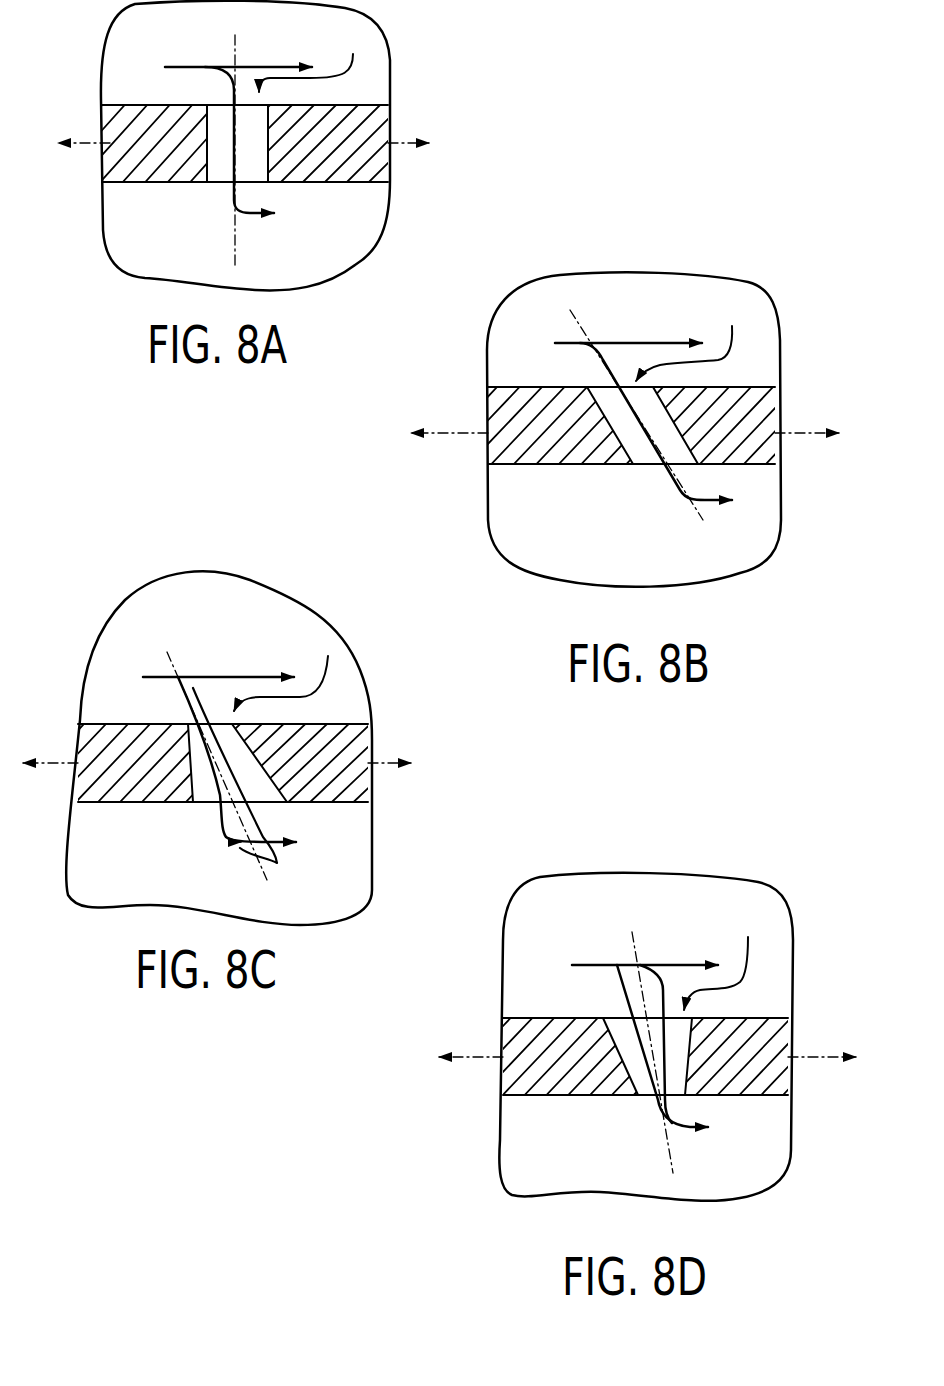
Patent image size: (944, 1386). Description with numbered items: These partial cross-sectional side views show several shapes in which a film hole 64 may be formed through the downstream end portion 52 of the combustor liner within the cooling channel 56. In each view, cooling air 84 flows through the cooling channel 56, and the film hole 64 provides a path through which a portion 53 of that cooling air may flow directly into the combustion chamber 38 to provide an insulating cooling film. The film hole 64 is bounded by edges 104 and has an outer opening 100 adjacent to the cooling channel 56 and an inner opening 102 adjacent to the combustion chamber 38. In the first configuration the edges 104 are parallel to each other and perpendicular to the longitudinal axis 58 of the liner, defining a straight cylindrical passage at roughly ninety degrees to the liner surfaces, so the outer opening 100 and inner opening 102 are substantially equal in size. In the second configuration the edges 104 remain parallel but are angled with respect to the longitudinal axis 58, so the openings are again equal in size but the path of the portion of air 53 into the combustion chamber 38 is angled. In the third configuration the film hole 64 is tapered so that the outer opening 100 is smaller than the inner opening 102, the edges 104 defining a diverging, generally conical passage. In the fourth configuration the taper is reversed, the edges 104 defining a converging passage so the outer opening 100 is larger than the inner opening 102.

In FIG. 8A, the combustion chamber 38 is at (142, 228).
In FIG. 8B, the combustion chamber 38 is at (533, 508).
In FIG. 8C, the combustion chamber 38 is at (120, 846).
In FIG. 8D, the combustion chamber 38 is at (547, 1141).
In FIG. 8A, the downstream end portion 52 is at (386, 124).
In FIG. 8B, the downstream end portion 52 is at (746, 432).
In FIG. 8C, the downstream end portion 52 is at (331, 765).
In FIG. 8D, the downstream end portion 52 is at (775, 1043).
In FIG. 8A, the portion of cooling air 53 is at (259, 214).
In FIG. 8B, the portion of cooling air 53 is at (713, 500).
In FIG. 8C, the portion of cooling air 53 is at (241, 786).
In FIG. 8D, the portion of cooling air 53 is at (688, 1126).
In FIG. 8A, the cooling channel 56 is at (207, 39).
In FIG. 8B, the cooling channel 56 is at (632, 305).
In FIG. 8C, the cooling channel 56 is at (183, 643).
In FIG. 8D, the cooling channel 56 is at (612, 935).
In FIG. 8A, the longitudinal axis 58 is at (88, 145).
In FIG. 8B, the longitudinal axis 58 is at (450, 435).
In FIG. 8C, the longitudinal axis 58 is at (52, 763).
In FIG. 8D, the longitudinal axis 58 is at (470, 1058).
In FIG. 8A, the film hole 64 is at (265, 143).
In FIG. 8B, the film hole 64 is at (603, 390).
In FIG. 8C, the film hole 64 is at (223, 767).
In FIG. 8D, the film hole 64 is at (620, 1021).
In FIG. 8A, the cooling air 84 is at (250, 63).
In FIG. 8B, the cooling air 84 is at (643, 340).
In FIG. 8C, the cooling air 84 is at (229, 672).
In FIG. 8D, the cooling air 84 is at (652, 967).
In FIG. 8A, the outer opening 100 is at (315, 60).
In FIG. 8B, the outer opening 100 is at (692, 340).
In FIG. 8C, the outer opening 100 is at (288, 669).
In FIG. 8D, the outer opening 100 is at (727, 961).
In FIG. 8A, the inner opening 102 is at (226, 190).
In FIG. 8B, the inner opening 102 is at (648, 478).
In FIG. 8C, the inner opening 102 is at (202, 810).
In FIG. 8D, the inner opening 102 is at (652, 1106).
In FIG. 8A, the edges 104 is at (195, 150).
In FIG. 8B, the edges 104 is at (601, 427).
In FIG. 8C, the edges 104 is at (183, 766).
In FIG. 8D, the edges 104 is at (615, 1058).